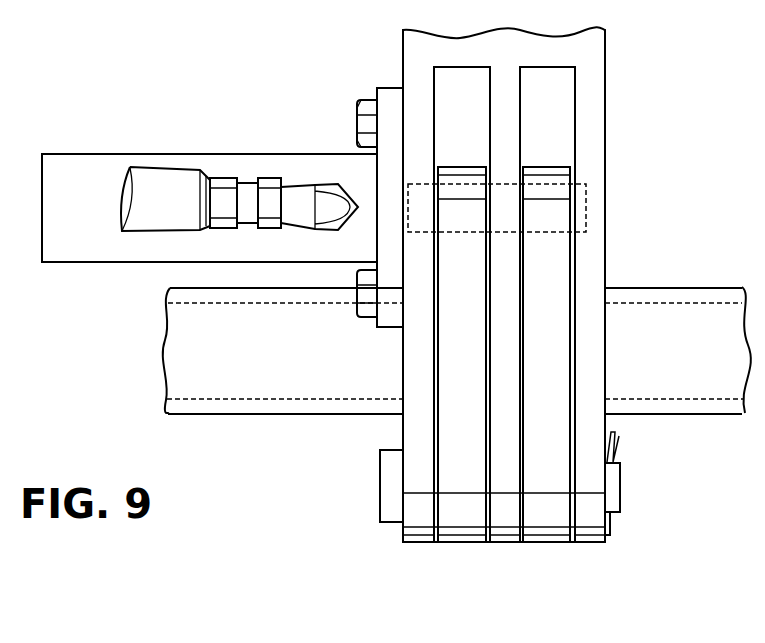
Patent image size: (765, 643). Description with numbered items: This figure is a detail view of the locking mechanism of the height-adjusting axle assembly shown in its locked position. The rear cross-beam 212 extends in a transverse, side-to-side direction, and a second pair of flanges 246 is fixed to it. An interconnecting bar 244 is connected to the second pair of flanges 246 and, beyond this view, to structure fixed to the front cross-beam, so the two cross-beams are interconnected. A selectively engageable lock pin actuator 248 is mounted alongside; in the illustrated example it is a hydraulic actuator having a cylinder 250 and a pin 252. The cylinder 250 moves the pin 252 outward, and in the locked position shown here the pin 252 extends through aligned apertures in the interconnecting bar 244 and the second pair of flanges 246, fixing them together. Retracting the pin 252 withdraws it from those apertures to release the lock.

The rear cross-beam 212 is at (292, 362).
The interconnecting bar 244 is at (593, 130).
The second pair of flanges 246 is at (465, 535).
The lock pin actuator 248 is at (225, 138).
The cylinder 250 is at (292, 153).
The pin 252 is at (586, 218).